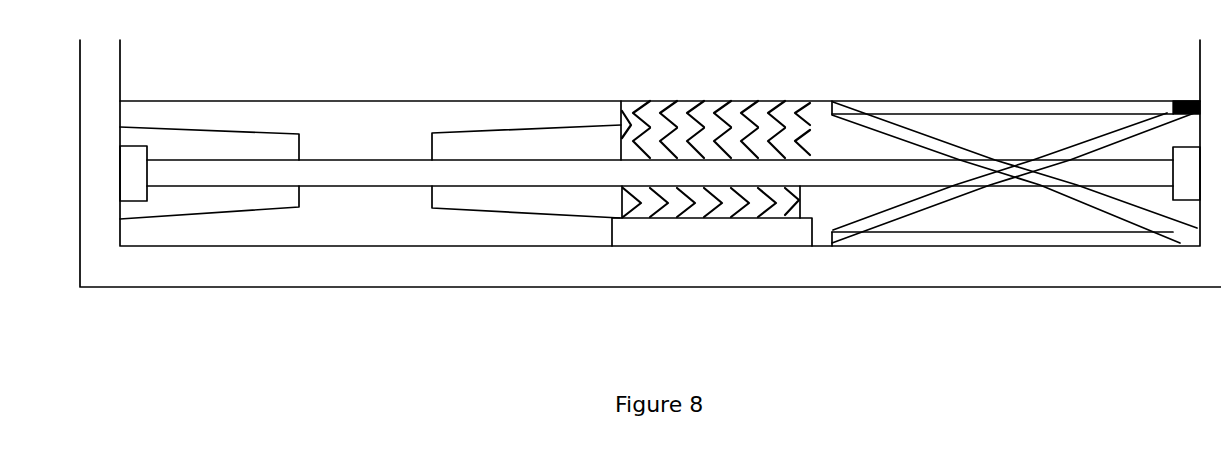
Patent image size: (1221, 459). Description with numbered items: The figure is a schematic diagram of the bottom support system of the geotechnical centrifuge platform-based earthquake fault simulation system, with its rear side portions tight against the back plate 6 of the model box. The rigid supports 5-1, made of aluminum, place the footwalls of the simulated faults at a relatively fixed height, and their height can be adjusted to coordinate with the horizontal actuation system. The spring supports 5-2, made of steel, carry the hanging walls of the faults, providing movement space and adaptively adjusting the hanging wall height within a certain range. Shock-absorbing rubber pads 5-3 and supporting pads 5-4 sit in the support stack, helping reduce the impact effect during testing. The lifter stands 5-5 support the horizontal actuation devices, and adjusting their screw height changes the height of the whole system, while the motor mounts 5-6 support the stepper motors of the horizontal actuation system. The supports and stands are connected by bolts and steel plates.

The rigid support 5-1 is at (646, 244).
The spring support 5-2 is at (684, 232).
The shock-absorbing rubber pad 5-3 is at (660, 232).
The supporting pad 5-4 is at (724, 274).
The lifter stand 5-5 is at (1014, 232).
The motor mount 5-6 is at (650, 201).
The back plate 6 is at (1141, 255).